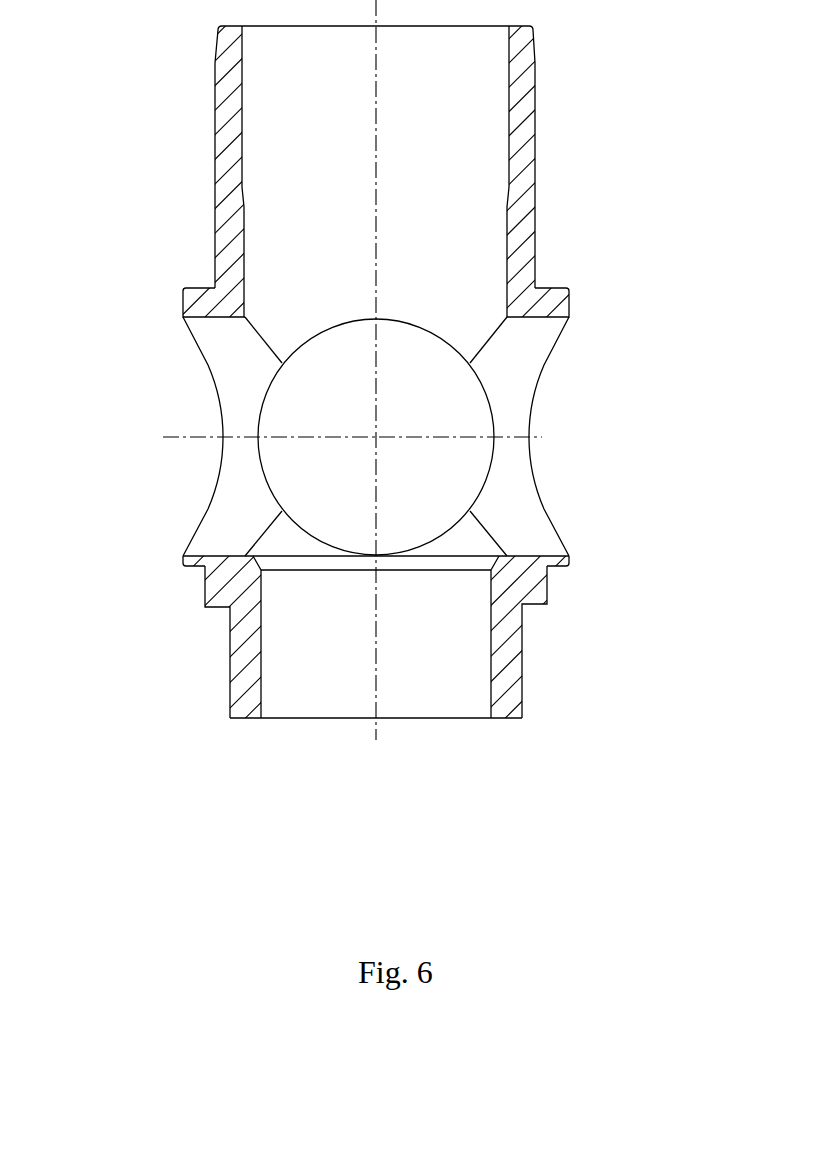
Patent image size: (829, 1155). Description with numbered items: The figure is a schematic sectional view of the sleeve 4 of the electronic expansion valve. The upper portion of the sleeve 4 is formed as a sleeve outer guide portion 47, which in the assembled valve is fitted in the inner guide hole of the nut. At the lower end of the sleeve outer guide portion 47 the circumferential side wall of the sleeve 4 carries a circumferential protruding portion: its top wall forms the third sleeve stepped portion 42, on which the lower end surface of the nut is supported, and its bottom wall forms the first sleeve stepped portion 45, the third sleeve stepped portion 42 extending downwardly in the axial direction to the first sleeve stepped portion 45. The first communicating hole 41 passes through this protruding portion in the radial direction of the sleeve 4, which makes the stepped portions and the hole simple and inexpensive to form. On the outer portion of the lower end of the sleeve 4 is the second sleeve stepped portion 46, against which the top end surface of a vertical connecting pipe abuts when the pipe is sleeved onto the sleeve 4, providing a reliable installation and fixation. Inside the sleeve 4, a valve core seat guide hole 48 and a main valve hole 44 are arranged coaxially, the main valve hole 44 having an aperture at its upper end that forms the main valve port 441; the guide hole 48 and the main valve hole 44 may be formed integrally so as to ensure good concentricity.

The sleeve 4 is at (518, 83).
The sleeve outer guide portion 47 is at (536, 136).
The valve core seat guide hole 48 is at (472, 212).
The third sleeve stepped portion 42 is at (552, 300).
The first communicating hole 41 is at (510, 465).
The first sleeve stepped portion 45 is at (557, 565).
The second sleeve stepped portion 46 is at (537, 605).
The main valve hole 44 is at (465, 667).
The main valve port 441 is at (257, 563).